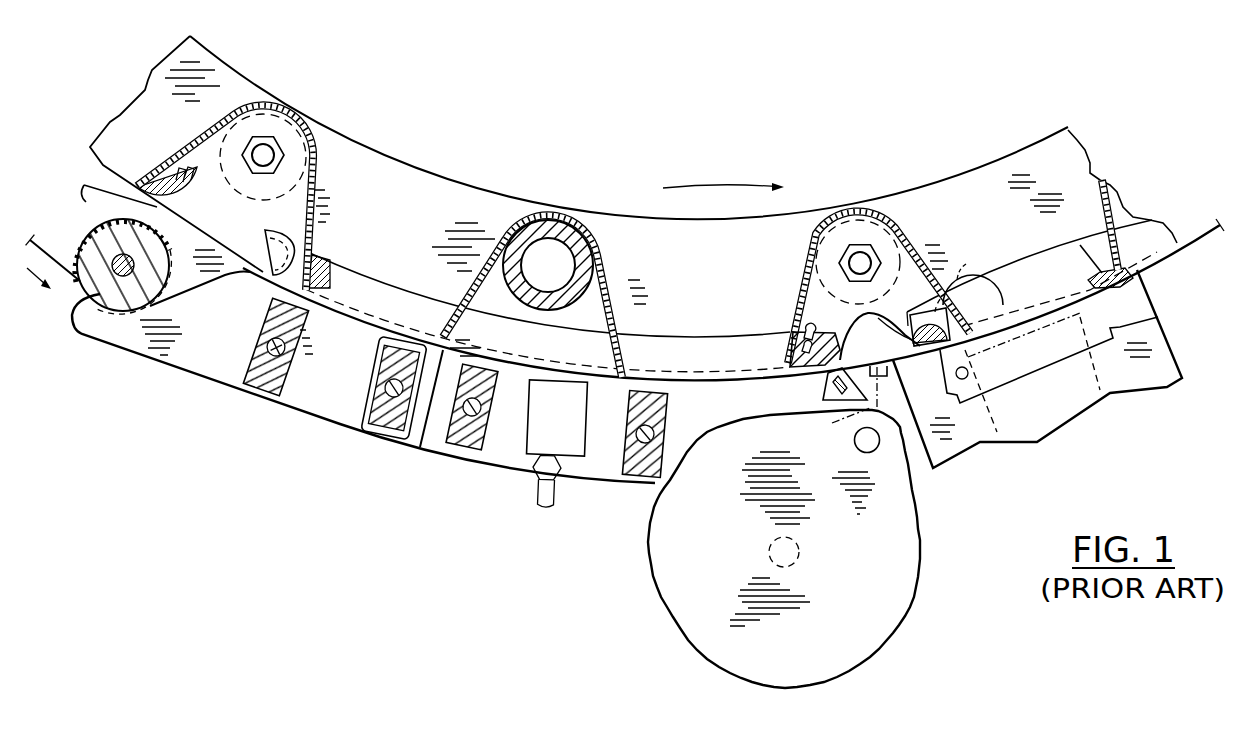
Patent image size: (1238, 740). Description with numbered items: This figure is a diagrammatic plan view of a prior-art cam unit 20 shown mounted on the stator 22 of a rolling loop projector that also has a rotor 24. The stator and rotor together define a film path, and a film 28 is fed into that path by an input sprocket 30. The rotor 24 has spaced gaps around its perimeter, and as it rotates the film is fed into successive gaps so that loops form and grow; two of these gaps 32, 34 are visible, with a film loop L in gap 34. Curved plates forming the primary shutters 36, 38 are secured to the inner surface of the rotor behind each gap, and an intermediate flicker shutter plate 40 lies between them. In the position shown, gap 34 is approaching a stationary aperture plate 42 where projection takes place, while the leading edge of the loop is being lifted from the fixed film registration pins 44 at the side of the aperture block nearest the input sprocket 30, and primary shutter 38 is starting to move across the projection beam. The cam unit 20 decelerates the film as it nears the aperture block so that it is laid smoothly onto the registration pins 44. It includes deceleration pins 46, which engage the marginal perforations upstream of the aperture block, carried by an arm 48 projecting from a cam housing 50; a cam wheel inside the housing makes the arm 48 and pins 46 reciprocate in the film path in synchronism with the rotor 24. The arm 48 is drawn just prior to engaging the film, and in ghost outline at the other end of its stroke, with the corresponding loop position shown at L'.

The cam unit 20 is at (650, 597).
The stator 22 is at (600, 486).
The rotor 24 is at (659, 258).
The film 28 is at (68, 290).
The input sprocket 30 is at (122, 321).
The rotor gap 32 is at (265, 231).
The rotor gap 34 is at (830, 318).
The primary shutter 36 is at (257, 105).
The primary shutter 38 is at (842, 219).
The intermediate flicker shutter plate 40 is at (541, 212).
The stationary aperture plate 42 is at (1013, 445).
The fixed film registration pins 44 is at (880, 336).
The deceleration pins 46 is at (820, 396).
The arm 48 is at (832, 423).
The cam housing 50 is at (895, 630).